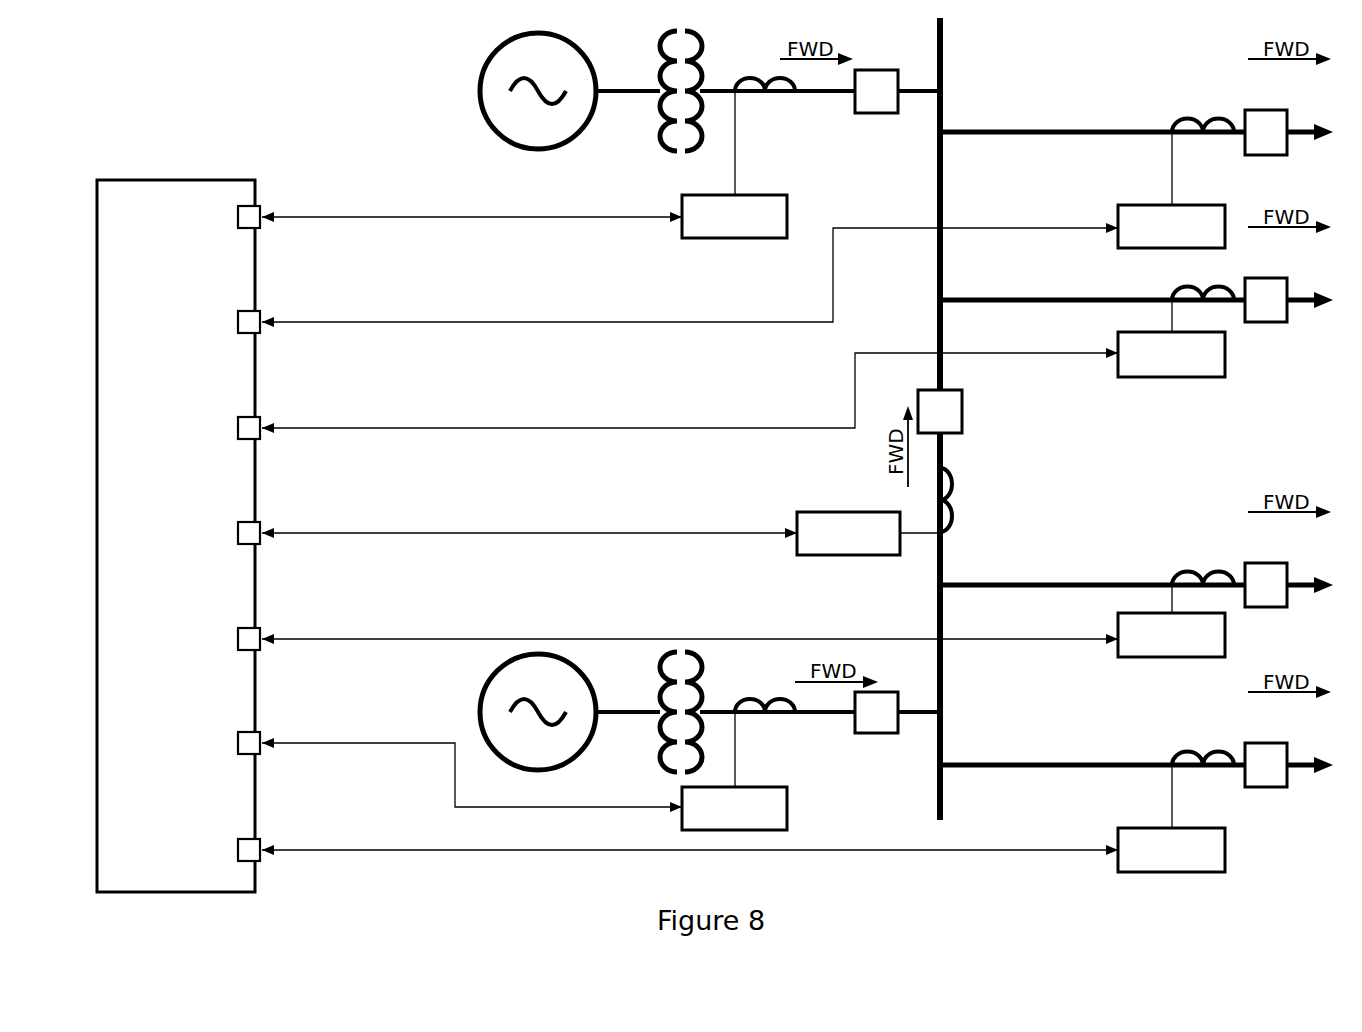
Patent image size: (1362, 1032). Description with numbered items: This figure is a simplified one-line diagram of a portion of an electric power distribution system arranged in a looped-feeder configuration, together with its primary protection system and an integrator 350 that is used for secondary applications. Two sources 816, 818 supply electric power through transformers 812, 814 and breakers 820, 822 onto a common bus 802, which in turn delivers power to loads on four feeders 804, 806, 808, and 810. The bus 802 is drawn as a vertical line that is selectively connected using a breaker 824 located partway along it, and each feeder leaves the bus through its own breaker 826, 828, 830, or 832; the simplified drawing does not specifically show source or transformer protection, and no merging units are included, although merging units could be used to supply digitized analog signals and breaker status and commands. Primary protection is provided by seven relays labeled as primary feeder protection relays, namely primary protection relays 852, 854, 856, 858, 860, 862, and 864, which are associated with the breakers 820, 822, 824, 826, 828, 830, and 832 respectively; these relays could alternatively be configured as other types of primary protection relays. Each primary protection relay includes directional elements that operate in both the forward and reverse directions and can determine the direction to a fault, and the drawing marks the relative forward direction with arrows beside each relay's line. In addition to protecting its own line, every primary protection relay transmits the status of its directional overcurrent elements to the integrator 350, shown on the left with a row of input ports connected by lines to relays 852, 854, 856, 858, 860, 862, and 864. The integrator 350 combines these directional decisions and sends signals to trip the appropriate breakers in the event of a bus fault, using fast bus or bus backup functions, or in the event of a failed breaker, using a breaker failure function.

The integrator 350 is at (164, 180).
The bus 802 is at (944, 50).
The feeder 804 is at (1291, 127).
The feeder 806 is at (1291, 295).
The feeder 808 is at (1291, 580).
The feeder 810 is at (1291, 761).
The transformer 812 is at (607, 92).
The transformer 814 is at (607, 714).
The source 816 is at (480, 87).
The source 818 is at (480, 707).
The breaker 820 is at (862, 72).
The breaker 822 is at (870, 735).
The breaker 824 is at (962, 410).
The breaker 826 is at (1258, 110).
The breaker 828 is at (1260, 278).
The breaker 830 is at (1260, 563).
The breaker 832 is at (1262, 743).
The primary protection relay 852 is at (730, 240).
The primary protection relay 854 is at (845, 557).
The primary protection relay 856 is at (787, 814).
The primary protection relay 858 is at (1118, 205).
The primary protection relay 860 is at (1185, 379).
The primary protection relay 862 is at (1160, 659).
The primary protection relay 864 is at (1152, 874).